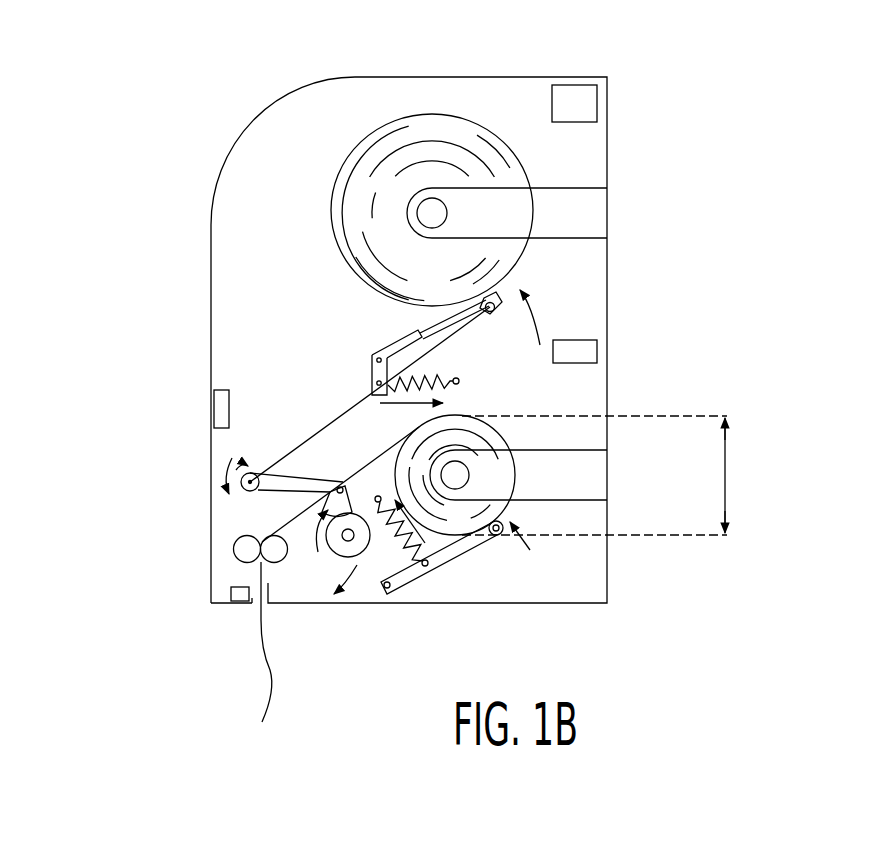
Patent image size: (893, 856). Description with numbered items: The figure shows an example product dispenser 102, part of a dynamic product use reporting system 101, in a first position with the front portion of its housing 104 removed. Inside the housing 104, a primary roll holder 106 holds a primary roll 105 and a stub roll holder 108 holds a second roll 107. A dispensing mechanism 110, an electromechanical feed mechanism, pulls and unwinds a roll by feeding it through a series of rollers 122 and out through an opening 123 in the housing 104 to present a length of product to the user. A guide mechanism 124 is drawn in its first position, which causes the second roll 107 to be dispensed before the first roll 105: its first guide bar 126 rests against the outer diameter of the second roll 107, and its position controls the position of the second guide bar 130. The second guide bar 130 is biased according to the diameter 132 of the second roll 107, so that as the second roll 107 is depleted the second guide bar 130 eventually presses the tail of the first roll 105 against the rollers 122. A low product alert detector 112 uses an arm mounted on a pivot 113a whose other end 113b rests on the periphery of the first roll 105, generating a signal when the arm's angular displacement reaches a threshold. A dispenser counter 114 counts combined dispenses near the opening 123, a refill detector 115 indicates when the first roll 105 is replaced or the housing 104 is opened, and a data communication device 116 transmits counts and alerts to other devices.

The dynamic product use reporting system 101 is at (198, 46).
The dispenser 102 is at (120, 10).
The housing 104 is at (276, 103).
The primary roll 105 is at (346, 270).
The primary roll holder 106 is at (595, 212).
The second roll 107 is at (512, 425).
The stub roll holder 108 is at (598, 474).
The dispensing mechanism 110 is at (229, 521).
The low product alert detector 112 is at (597, 98).
The pivot 113a is at (372, 362).
The other end of arm 113b is at (492, 315).
The dispenser counter 114 is at (230, 595).
The refill detector 115 is at (218, 410).
The data communication device 116 is at (590, 353).
The rollers 122 is at (233, 550).
The opening 123 is at (250, 612).
The guide mechanism 124 is at (503, 562).
The first guide bar 126 is at (513, 527).
The second guide bar 130 is at (281, 477).
The diameter 132 is at (727, 475).